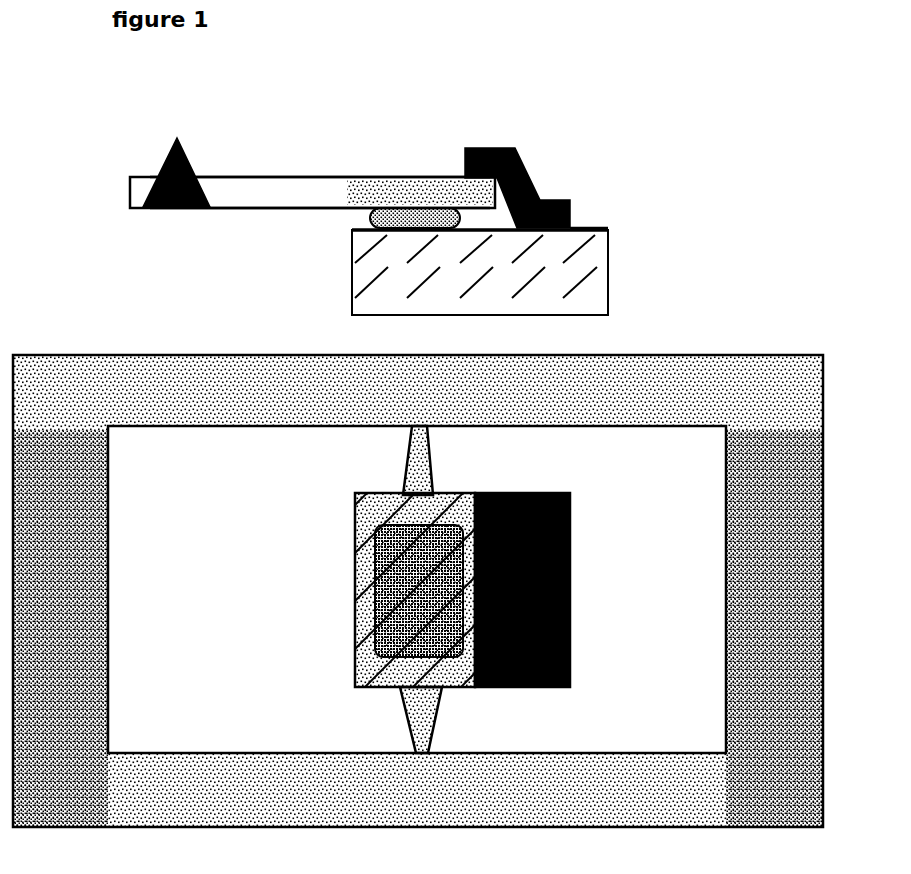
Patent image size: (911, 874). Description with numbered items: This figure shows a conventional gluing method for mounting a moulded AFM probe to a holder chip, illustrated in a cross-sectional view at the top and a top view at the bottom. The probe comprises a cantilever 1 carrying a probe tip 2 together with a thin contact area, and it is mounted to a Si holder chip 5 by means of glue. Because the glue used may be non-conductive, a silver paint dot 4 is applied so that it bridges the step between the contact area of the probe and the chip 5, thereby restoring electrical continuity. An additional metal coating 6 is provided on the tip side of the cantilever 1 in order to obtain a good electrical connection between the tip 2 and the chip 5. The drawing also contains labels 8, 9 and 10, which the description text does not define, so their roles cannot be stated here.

The cantilever 1 is at (312, 403).
The probe tip 2 is at (181, 153).
The silver paint dot 4 is at (500, 148).
The Si holder chip 5 is at (643, 586).
The metal coating 6 is at (235, 208).
The pivot bearing 8 is at (352, 235).
The upper surface of beam 9 is at (277, 177).
The contact point 10 is at (607, 229).